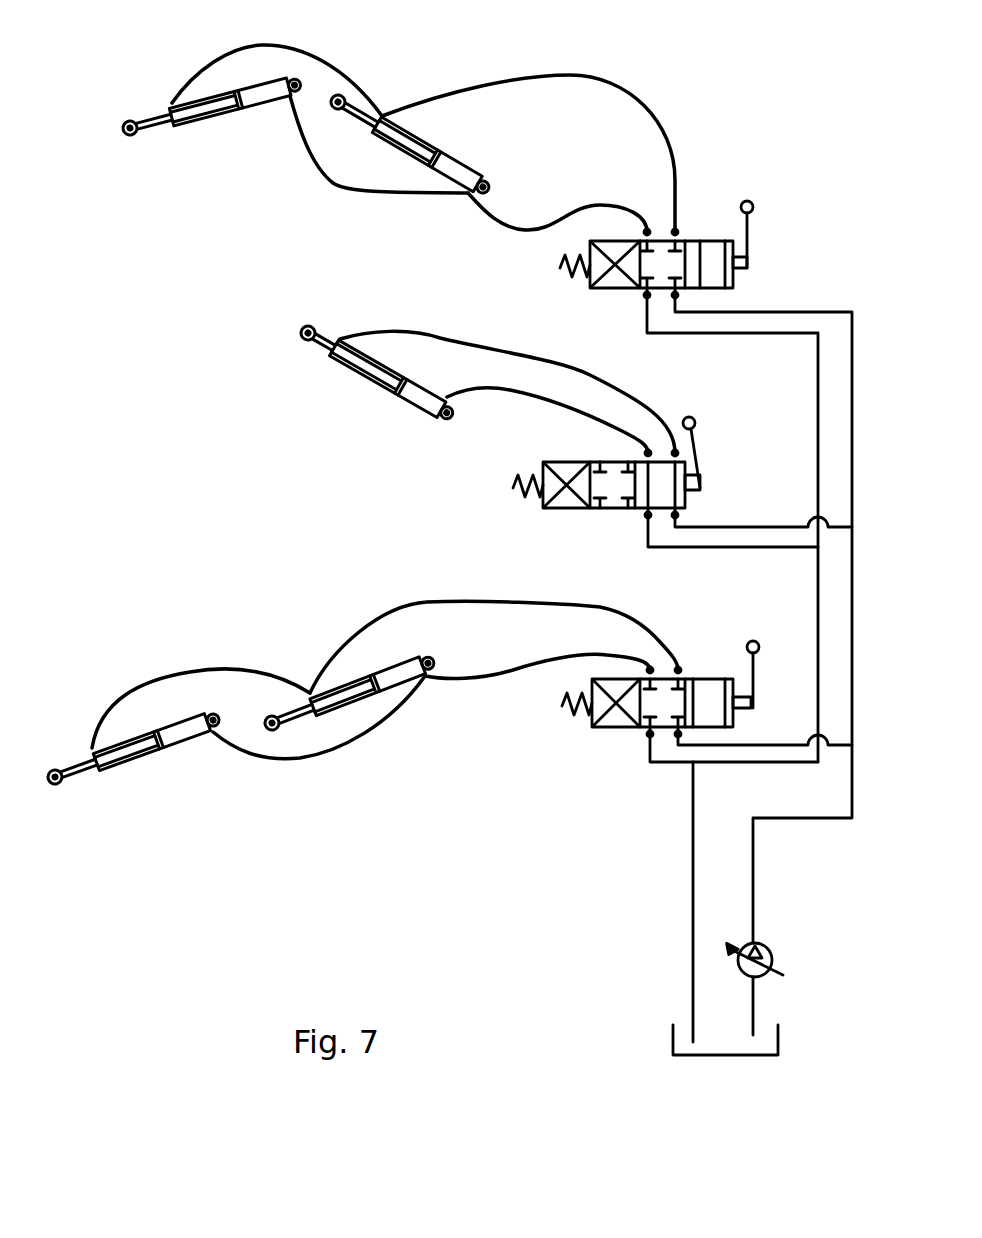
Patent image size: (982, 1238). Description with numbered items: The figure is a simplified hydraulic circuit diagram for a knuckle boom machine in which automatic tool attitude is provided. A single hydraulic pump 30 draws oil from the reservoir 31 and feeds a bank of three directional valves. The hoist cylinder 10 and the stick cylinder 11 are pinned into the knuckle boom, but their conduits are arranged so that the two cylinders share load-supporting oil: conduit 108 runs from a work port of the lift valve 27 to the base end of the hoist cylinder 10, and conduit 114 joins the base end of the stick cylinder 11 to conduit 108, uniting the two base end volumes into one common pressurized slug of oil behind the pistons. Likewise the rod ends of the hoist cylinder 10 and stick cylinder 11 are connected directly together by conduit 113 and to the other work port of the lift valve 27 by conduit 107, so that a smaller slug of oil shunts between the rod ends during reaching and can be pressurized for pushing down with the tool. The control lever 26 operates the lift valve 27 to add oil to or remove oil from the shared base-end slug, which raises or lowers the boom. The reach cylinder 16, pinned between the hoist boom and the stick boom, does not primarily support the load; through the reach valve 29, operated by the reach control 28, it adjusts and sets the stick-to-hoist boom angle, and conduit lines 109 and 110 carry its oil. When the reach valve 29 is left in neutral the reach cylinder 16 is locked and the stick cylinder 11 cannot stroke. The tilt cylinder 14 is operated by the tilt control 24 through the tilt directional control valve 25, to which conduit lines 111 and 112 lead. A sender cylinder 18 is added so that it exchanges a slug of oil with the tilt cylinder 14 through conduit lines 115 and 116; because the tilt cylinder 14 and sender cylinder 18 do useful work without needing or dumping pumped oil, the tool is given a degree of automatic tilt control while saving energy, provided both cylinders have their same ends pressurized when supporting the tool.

The hoist cylinder 10 is at (455, 153).
The stick cylinder 11 is at (215, 115).
The tilt cylinder 14 is at (147, 757).
The reach cylinder 16 is at (393, 393).
The sender cylinder 18 is at (390, 667).
The tilt control 24 is at (753, 678).
The tilt directional control valve 25 is at (608, 728).
The control lever 26 is at (750, 233).
The lift valve 27 is at (603, 289).
The reach control 28 is at (705, 463).
The reach valve 29 is at (543, 515).
The hydraulic pump 30 is at (775, 963).
The reservoir 31 is at (671, 1042).
The conduit 107 is at (652, 118).
The conduit 108 is at (500, 225).
The hydraulic line 109 is at (403, 328).
The hydraulic line 110 is at (580, 418).
The hydraulic line 111 is at (420, 597).
The hydraulic line 112 is at (490, 674).
The conduit 113 is at (333, 66).
The conduit 114 is at (330, 177).
The hydraulic line 115 is at (213, 672).
The hydraulic line 116 is at (337, 747).